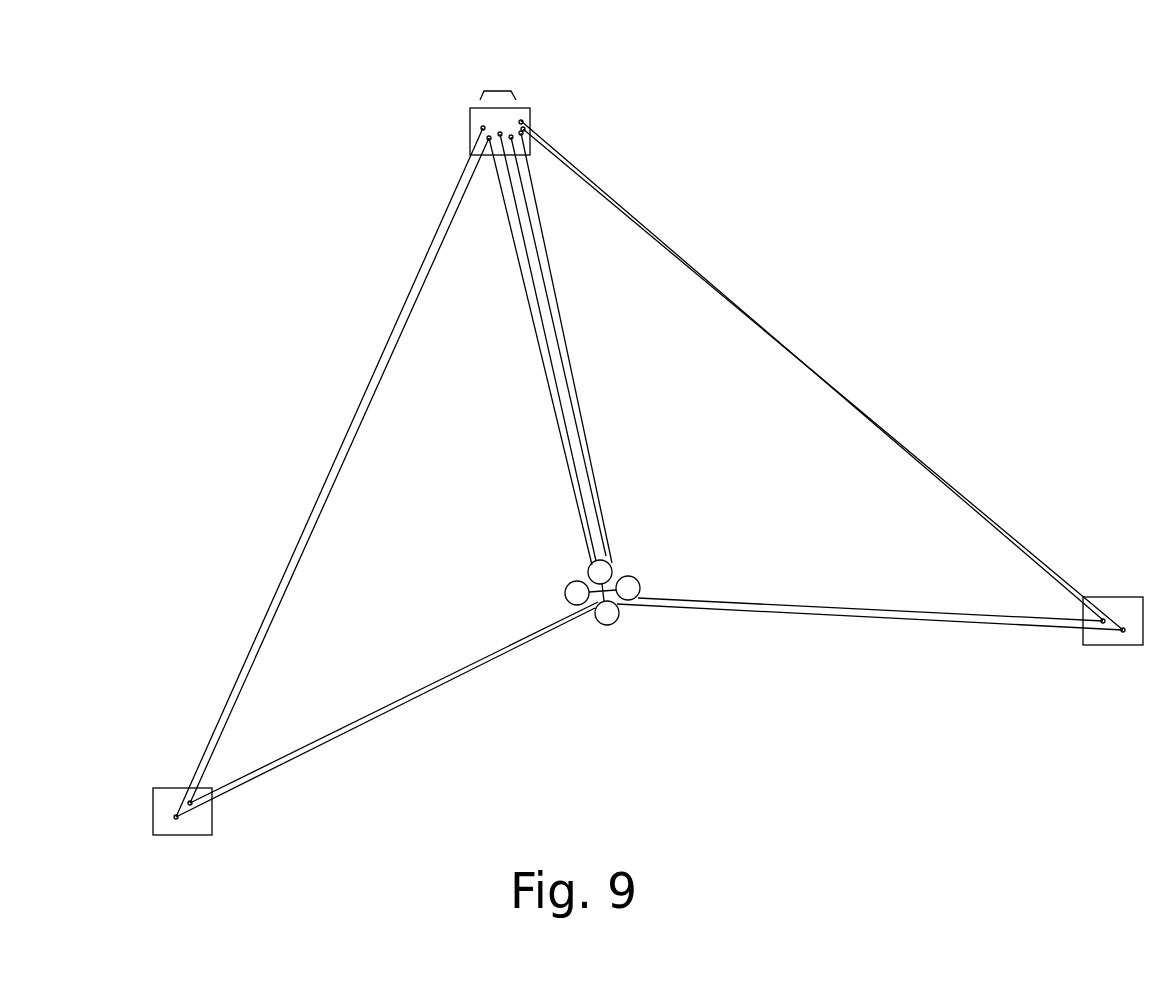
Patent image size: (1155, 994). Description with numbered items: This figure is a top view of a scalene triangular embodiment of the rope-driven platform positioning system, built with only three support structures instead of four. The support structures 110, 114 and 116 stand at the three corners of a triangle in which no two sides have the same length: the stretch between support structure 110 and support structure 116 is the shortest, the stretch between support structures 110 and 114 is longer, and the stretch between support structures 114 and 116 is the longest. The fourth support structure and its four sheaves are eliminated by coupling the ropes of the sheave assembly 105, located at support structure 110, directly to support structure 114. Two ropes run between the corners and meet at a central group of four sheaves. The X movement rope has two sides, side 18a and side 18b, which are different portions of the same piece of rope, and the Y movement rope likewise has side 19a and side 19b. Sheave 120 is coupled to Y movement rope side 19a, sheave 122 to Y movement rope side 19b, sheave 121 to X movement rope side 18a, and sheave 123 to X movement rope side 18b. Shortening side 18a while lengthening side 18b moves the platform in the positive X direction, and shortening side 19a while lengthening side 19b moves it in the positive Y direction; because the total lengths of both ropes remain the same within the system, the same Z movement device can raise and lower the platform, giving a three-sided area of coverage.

The sheave assembly 105 is at (497, 90).
The support structure 110 is at (470, 150).
The support structure 114 is at (1097, 650).
The support structure 116 is at (142, 792).
The sheave 120 is at (607, 552).
The sheave 121 is at (645, 582).
The sheave 122 is at (597, 628).
The sheave 123 is at (562, 593).
The X movement rope side 18a is at (583, 383).
The X movement rope side 18b is at (345, 470).
The Y movement rope side 19a is at (547, 363).
The Y movement rope side 19b is at (322, 484).